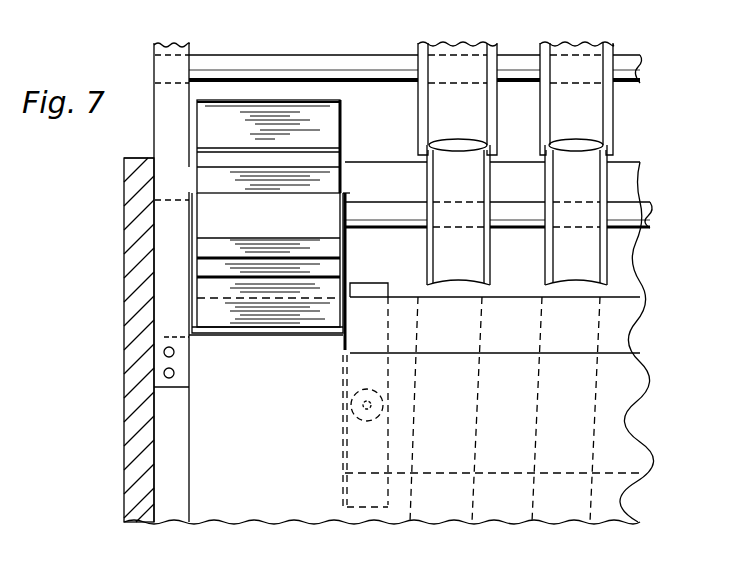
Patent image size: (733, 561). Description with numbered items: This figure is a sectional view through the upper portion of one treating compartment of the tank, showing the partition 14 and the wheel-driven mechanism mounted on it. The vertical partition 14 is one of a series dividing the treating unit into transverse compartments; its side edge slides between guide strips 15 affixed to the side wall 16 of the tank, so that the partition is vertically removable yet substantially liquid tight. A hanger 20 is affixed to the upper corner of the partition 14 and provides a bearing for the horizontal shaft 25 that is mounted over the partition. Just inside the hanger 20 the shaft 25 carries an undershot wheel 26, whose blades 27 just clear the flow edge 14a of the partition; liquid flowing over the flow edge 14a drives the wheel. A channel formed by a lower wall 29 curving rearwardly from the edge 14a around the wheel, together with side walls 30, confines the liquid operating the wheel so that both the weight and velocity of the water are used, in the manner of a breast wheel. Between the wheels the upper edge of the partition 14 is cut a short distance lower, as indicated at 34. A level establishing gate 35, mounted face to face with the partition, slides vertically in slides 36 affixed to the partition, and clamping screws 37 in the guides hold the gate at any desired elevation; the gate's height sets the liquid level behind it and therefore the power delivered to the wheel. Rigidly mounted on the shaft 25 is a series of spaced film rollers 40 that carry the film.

The vertical partition 14 is at (382, 429).
The flow edge 14a is at (277, 334).
The guide strip 15 is at (165, 456).
The side wall 16 is at (133, 398).
The hanger 20 is at (160, 132).
The horizontal shaft 25 is at (398, 182).
The undershot wheel 26 is at (264, 112).
The blade 27 is at (328, 127).
The lower wall 29 is at (238, 337).
The side wall 30 is at (346, 256).
The lowered upper edge 34 is at (452, 350).
The level establishing gate 35 is at (555, 282).
The slide 36 is at (392, 268).
The clamping screw 37 is at (351, 397).
The film roller 40 is at (588, 262).